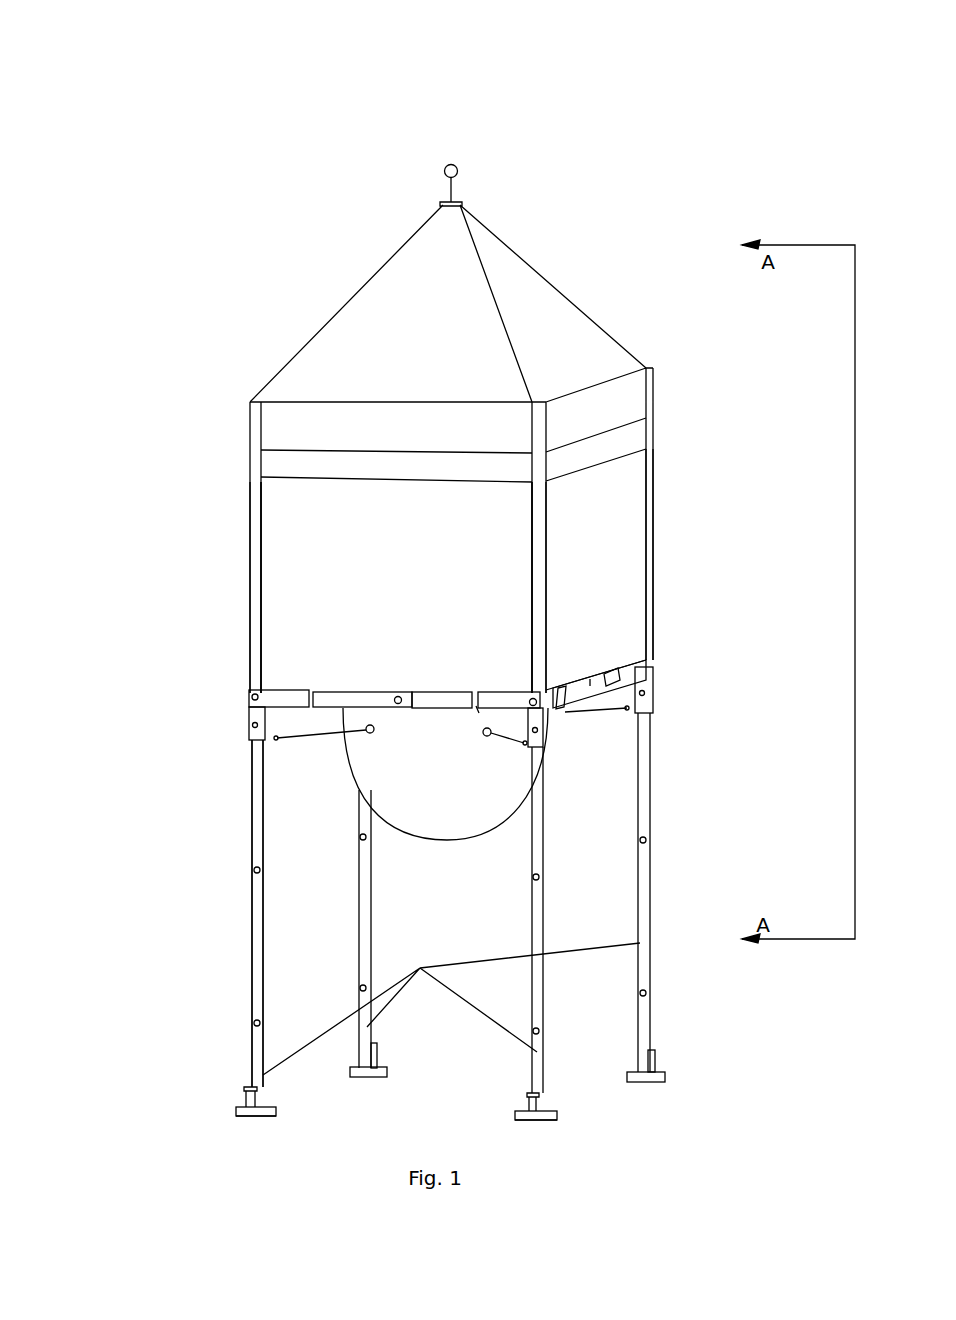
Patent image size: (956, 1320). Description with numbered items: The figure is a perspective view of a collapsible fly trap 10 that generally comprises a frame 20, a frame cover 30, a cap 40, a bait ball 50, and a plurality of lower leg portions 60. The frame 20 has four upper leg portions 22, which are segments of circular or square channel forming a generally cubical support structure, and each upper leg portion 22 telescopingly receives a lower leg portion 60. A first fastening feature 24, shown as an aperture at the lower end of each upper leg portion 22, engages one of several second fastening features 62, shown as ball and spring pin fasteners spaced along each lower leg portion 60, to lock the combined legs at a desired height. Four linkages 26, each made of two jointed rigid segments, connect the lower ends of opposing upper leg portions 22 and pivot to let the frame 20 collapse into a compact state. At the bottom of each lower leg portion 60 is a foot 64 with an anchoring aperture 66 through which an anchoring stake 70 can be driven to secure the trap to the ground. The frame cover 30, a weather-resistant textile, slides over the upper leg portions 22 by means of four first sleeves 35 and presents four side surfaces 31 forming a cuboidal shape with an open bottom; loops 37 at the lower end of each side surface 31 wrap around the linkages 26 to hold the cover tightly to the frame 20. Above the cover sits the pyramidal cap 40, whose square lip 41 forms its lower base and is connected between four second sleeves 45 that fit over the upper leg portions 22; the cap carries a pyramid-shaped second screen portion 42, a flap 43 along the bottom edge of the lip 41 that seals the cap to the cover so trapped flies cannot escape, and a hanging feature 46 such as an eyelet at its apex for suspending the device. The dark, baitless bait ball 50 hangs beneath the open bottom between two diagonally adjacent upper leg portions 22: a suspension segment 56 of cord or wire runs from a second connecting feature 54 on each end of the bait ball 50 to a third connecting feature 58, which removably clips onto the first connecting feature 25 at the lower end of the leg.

The collapsible fly trap 10 is at (106, 105).
The frame 20 is at (238, 752).
The upper leg portion 22 is at (652, 677).
The first fastening feature 24 is at (535, 731).
The first connecting feature 25 is at (257, 748).
The linkage 26 is at (620, 670).
The frame cover 30 is at (144, 590).
The side surface 31 is at (630, 502).
The first sleeve 35 is at (652, 581).
The loop 37 is at (560, 697).
The cap 40 is at (540, 269).
The lip 41 is at (593, 417).
The second screen portion 42 is at (550, 313).
The flap 43 is at (617, 445).
The second sleeve 45 is at (652, 395).
The hanging feature 46 is at (462, 203).
The bait ball 50 is at (462, 865).
The second connecting feature 54 is at (486, 736).
The suspension segment 56 is at (567, 714).
The third connecting feature 58 is at (524, 748).
The lower leg portion 60 is at (451, 1009).
The second fastening feature 62 is at (653, 703).
The foot 64 is at (557, 1115).
The anchoring aperture 66 is at (542, 1110).
The anchoring stake 70 is at (655, 1052).